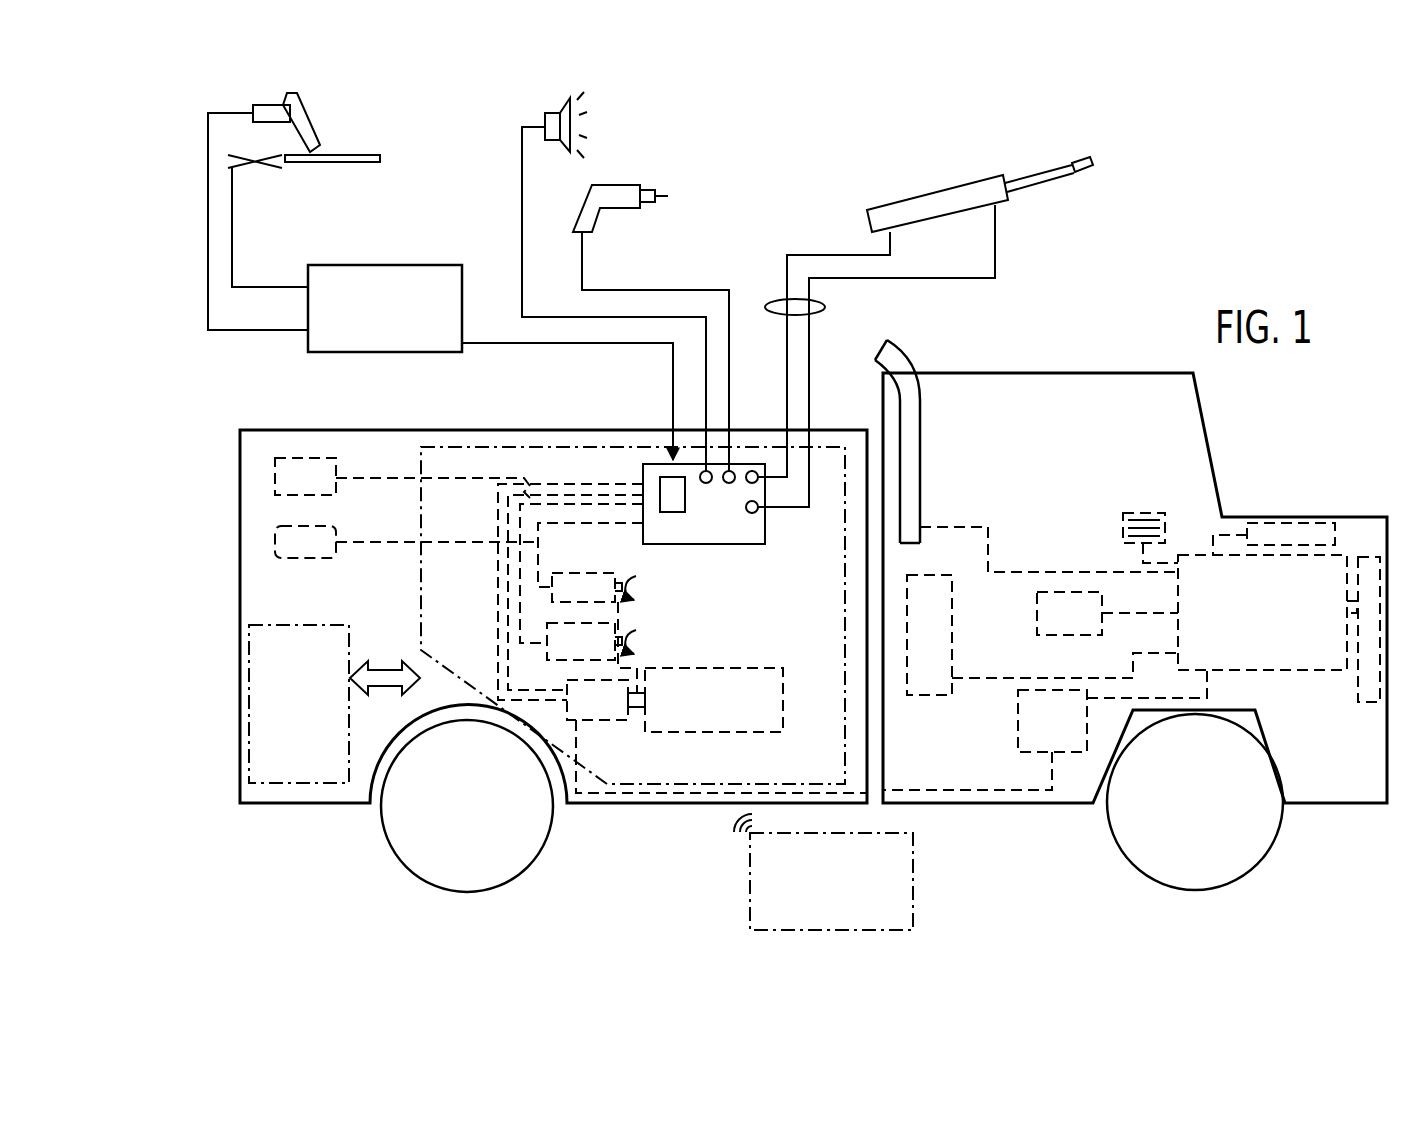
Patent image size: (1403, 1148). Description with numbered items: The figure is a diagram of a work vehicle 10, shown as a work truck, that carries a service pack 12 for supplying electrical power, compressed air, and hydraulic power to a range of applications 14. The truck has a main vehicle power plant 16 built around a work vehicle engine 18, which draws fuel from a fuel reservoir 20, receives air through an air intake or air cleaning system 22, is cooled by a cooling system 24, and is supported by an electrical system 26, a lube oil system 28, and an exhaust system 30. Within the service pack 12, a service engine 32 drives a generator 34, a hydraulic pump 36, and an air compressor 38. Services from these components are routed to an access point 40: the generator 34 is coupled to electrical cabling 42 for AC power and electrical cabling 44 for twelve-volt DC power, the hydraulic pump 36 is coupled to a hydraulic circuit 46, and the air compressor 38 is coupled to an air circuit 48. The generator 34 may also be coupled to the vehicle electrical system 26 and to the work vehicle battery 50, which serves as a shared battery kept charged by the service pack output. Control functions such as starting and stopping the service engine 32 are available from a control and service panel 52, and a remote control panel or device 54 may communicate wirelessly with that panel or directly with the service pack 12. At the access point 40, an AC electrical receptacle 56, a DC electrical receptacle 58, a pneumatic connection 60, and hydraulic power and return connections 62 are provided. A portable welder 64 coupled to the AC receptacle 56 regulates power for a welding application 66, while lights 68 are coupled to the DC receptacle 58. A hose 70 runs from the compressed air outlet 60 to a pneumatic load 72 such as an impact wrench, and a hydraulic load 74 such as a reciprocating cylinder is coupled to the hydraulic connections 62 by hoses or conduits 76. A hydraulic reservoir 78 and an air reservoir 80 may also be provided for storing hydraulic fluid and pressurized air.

The work vehicle 10 is at (306, 824).
The service pack 12 is at (420, 607).
The applications 14 is at (1029, 247).
The main vehicle power plant 16 is at (1234, 451).
The work vehicle engine 18 is at (1260, 670).
The fuel reservoir 20 is at (940, 695).
The air intake or air cleaning system 22 is at (1266, 522).
The cooling system 24 is at (1370, 702).
The electrical system 26 is at (1123, 525).
The lube oil system 28 is at (1037, 605).
The exhaust system 30 is at (920, 465).
The service engine 32 is at (706, 668).
The generator 34 is at (597, 720).
The hydraulic pump 36 is at (573, 660).
The air compressor 38 is at (565, 573).
The access point 40 is at (698, 480).
The electrical cabling 42 is at (497, 632).
The electrical cabling 44 is at (507, 670).
The hydraulic circuit 46 is at (518, 587).
The air circuit 48 is at (537, 537).
The work vehicle battery 50 is at (1018, 735).
The control and service panel 52 is at (305, 625).
The remote control panel or device 54 is at (913, 880).
The electrical receptacle 56 is at (660, 480).
The electrical receptacle 58 is at (705, 468).
The pneumatic connection 60 is at (731, 469).
The hydraulic power and return connections 62 is at (760, 482).
The portable welder 64 is at (397, 265).
The welding application 66 is at (355, 152).
The lights 68 is at (553, 113).
The hose 70 is at (657, 290).
The pneumatic load 72 is at (620, 185).
The hydraulic load 74 is at (940, 190).
The hoses or conduits 76 is at (770, 303).
The hydraulic reservoir 78 is at (327, 495).
The air reservoir 80 is at (305, 560).